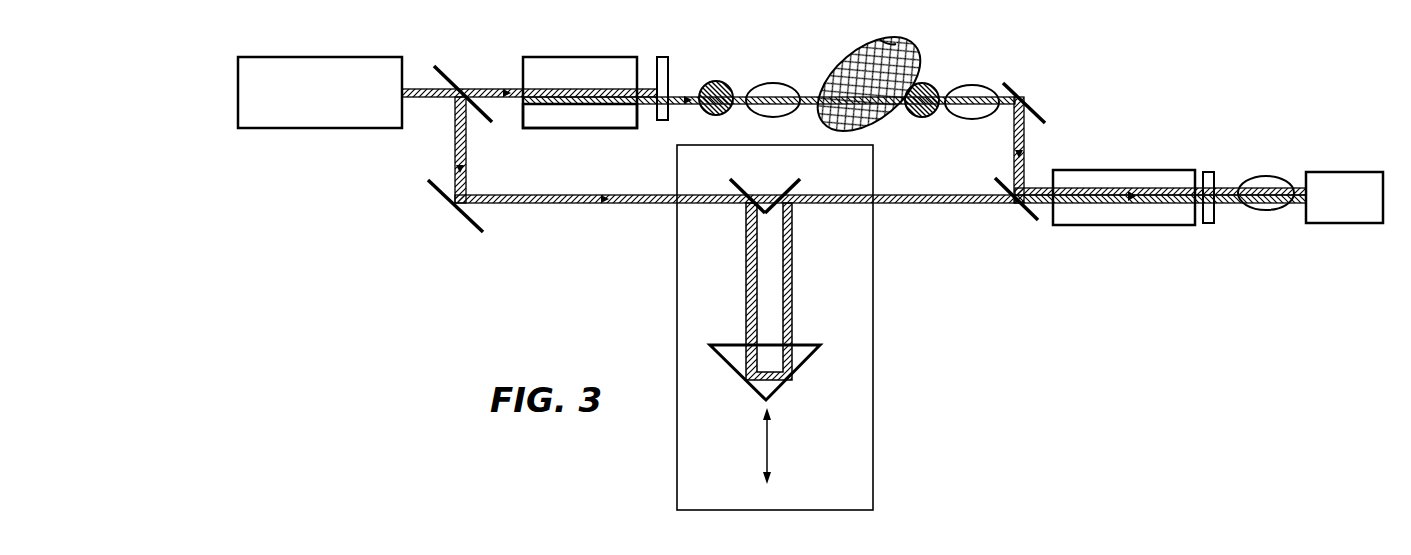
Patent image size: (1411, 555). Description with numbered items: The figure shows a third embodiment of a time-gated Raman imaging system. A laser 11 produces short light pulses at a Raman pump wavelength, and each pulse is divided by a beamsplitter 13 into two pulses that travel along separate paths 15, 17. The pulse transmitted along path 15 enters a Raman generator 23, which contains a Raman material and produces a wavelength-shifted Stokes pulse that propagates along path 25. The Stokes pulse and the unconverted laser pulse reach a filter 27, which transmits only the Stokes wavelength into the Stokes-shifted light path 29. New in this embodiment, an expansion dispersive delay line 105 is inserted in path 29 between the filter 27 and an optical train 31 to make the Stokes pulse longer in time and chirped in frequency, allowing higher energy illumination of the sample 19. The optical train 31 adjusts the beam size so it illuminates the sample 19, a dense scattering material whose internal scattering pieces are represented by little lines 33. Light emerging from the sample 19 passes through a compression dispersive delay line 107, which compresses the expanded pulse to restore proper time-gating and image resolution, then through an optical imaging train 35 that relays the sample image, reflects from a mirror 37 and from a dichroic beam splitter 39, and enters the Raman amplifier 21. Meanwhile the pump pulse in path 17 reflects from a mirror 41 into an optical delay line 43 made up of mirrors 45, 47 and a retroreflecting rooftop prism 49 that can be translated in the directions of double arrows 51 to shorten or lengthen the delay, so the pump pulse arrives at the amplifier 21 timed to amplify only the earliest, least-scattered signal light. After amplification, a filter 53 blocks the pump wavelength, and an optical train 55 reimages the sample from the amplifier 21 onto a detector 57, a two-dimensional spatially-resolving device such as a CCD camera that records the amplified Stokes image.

The laser 11 is at (318, 38).
The beamsplitter 13 is at (462, 44).
The path 15 is at (488, 89).
The path 17 is at (455, 143).
The sample 19 is at (850, 50).
The Raman amplifier 21 is at (1122, 152).
The Raman generator 23 is at (590, 57).
The path 25 is at (575, 128).
The filter 27 is at (670, 68).
The Stokes-shifted light path 29 is at (736, 94).
The optical train 31 is at (797, 60).
The little lines 33 is at (890, 42).
The optical imaging train 35 is at (984, 62).
The mirror 37 is at (1042, 110).
The dichroic beam splitter 39 is at (1023, 218).
The mirror 41 is at (470, 225).
The optical delay line 43 is at (889, 312).
The mirror 45 is at (744, 183).
The mirror 47 is at (797, 183).
The rooftop prism 49 is at (793, 385).
The double arrows 51 is at (780, 432).
The filter 53 is at (1206, 172).
The optical train 55 is at (1280, 176).
The detector 57 is at (1356, 172).
The expansion dispersive delay line 105 is at (734, 80).
The compression dispersive delay line 107 is at (936, 112).